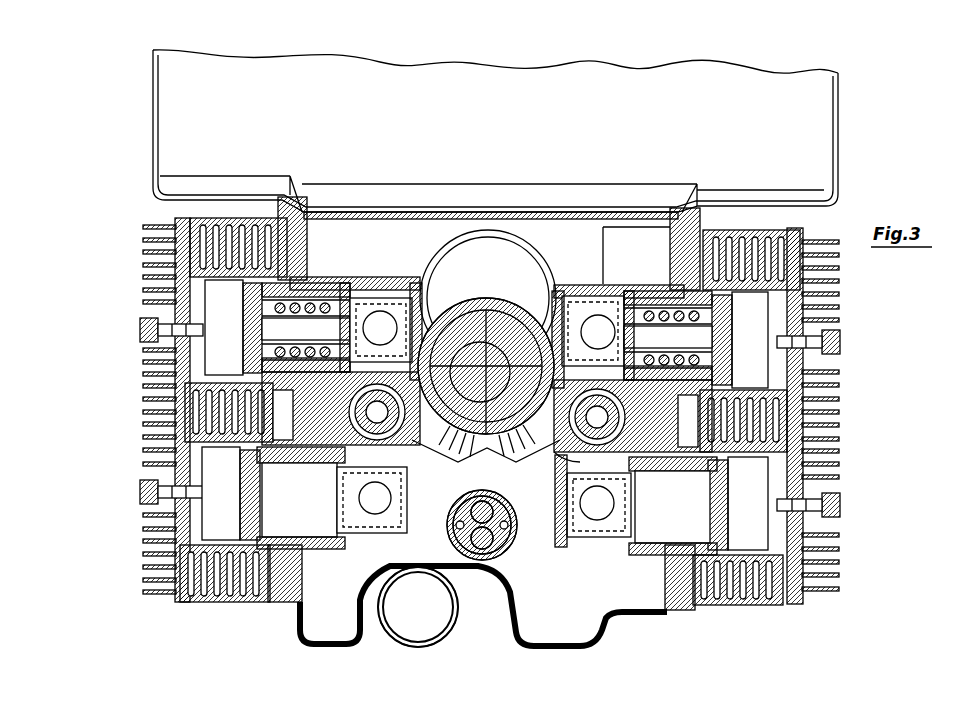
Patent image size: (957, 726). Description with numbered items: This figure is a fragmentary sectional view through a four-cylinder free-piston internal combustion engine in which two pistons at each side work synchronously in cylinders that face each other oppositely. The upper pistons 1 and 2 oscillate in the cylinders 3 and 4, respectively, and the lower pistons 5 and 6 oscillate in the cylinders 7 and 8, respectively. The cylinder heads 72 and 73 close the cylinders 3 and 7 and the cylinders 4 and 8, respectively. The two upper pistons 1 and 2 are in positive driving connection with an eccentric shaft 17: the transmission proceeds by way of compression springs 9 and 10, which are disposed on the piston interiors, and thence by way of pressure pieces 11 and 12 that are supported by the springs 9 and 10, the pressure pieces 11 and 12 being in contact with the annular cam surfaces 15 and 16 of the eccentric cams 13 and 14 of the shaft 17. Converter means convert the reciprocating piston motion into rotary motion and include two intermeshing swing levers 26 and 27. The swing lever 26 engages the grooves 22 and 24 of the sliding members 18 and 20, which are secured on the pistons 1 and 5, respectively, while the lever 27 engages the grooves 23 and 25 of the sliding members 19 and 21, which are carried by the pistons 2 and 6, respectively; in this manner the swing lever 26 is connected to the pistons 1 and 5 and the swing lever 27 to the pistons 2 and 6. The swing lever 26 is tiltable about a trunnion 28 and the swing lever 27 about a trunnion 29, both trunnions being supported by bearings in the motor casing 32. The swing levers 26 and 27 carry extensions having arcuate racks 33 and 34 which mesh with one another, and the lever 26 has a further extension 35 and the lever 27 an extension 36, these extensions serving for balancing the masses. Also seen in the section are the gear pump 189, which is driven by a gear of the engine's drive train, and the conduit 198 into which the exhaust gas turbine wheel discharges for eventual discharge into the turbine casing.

The upper piston 1 is at (247, 298).
The upper piston 2 is at (732, 331).
The cylinder 3 is at (305, 276).
The cylinder 4 is at (736, 292).
The lower piston 5 is at (278, 528).
The lower piston 6 is at (687, 545).
The cylinder 7 is at (296, 554).
The cylinder 8 is at (687, 565).
The compression spring 9 is at (246, 320).
The compression spring 10 is at (732, 346).
The pressure piece 11 is at (318, 307).
The pressure piece 12 is at (646, 290).
The eccentric cam 13 is at (518, 270).
The eccentric cam 14 is at (440, 444).
The annular cam surface 15 is at (478, 230).
The annular cam surface 16 is at (481, 300).
The eccentric shaft 17 is at (515, 322).
The sliding member 18 is at (360, 300).
The sliding member 19 is at (586, 300).
The sliding member 20 is at (343, 562).
The sliding member 21 is at (557, 530).
The groove 22 is at (416, 290).
The groove 23 is at (575, 411).
The groove 24 is at (398, 501).
The groove 25 is at (565, 501).
The swing lever 26 is at (408, 471).
The swing lever 27 is at (573, 458).
The trunnion 28 is at (398, 413).
The trunnion 29 is at (618, 490).
The motor casing 32 is at (547, 212).
The arcuate rack 33 is at (453, 446).
The arcuate rack 34 is at (519, 446).
The extension 35 is at (253, 363).
The extension 36 is at (656, 455).
The cylinder head 72 is at (146, 428).
The cylinder head 73 is at (810, 425).
The gear pump 189 is at (488, 557).
The conduit 198 is at (432, 632).